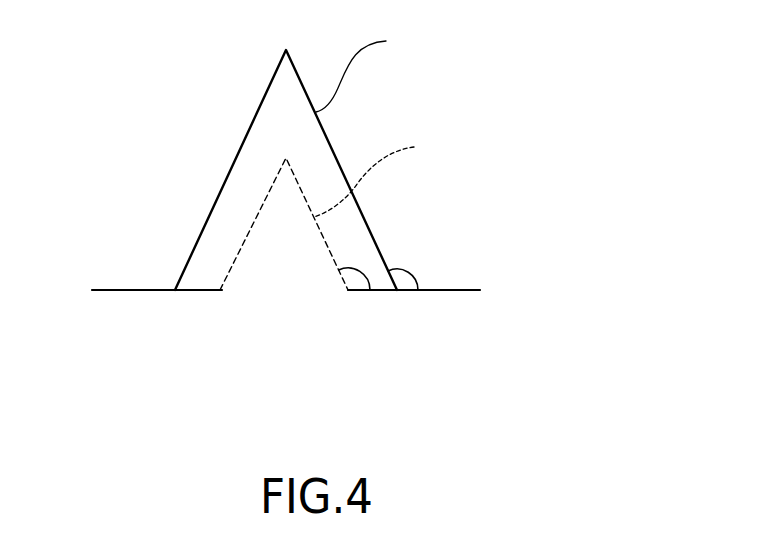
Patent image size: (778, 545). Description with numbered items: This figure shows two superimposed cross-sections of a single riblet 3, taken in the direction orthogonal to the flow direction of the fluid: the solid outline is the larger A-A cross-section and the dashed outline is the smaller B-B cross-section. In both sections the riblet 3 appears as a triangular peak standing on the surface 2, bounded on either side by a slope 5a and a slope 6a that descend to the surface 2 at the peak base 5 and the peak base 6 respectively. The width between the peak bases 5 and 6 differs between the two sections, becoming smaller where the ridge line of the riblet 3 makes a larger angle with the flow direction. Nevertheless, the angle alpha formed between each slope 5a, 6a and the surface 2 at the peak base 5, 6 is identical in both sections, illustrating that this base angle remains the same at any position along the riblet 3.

The surface 2 is at (457, 290).
The riblet 3 is at (205, 183).
The peak base 5 is at (361, 306).
The peak base 6 is at (398, 302).
The slope 5a is at (335, 189).
The slope 6a is at (304, 195).